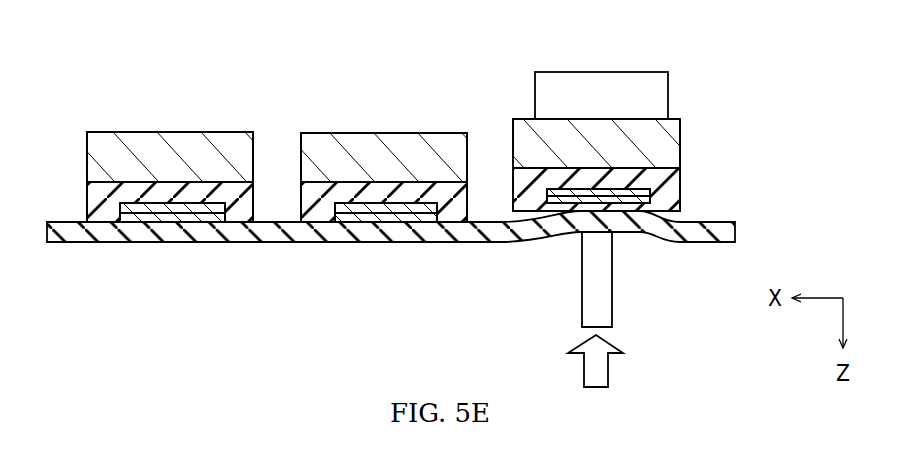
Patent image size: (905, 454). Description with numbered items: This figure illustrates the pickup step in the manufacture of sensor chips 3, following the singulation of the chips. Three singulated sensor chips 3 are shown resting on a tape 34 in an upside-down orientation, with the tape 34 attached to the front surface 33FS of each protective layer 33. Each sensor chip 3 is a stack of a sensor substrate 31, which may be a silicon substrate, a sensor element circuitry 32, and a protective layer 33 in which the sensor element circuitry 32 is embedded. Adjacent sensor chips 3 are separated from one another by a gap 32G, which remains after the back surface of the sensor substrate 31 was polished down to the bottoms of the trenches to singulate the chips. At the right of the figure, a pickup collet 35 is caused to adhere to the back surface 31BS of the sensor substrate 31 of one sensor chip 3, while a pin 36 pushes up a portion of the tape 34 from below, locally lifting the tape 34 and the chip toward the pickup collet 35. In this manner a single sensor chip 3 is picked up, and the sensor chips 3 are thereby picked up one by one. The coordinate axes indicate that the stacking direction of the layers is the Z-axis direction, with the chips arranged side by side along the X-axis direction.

The sensor chip 3 is at (162, 120).
The sensor substrate 31 is at (343, 140).
The sensor element circuitry 32 is at (385, 207).
The protective layer 33 is at (425, 200).
The gap between elements 32G is at (293, 145).
The back surface of the sensor substrate 31BS is at (527, 118).
The front surface of the protective layer 33FS is at (403, 225).
The tape 34 is at (340, 243).
The pickup collet 35 is at (600, 100).
The pin 36 is at (603, 281).